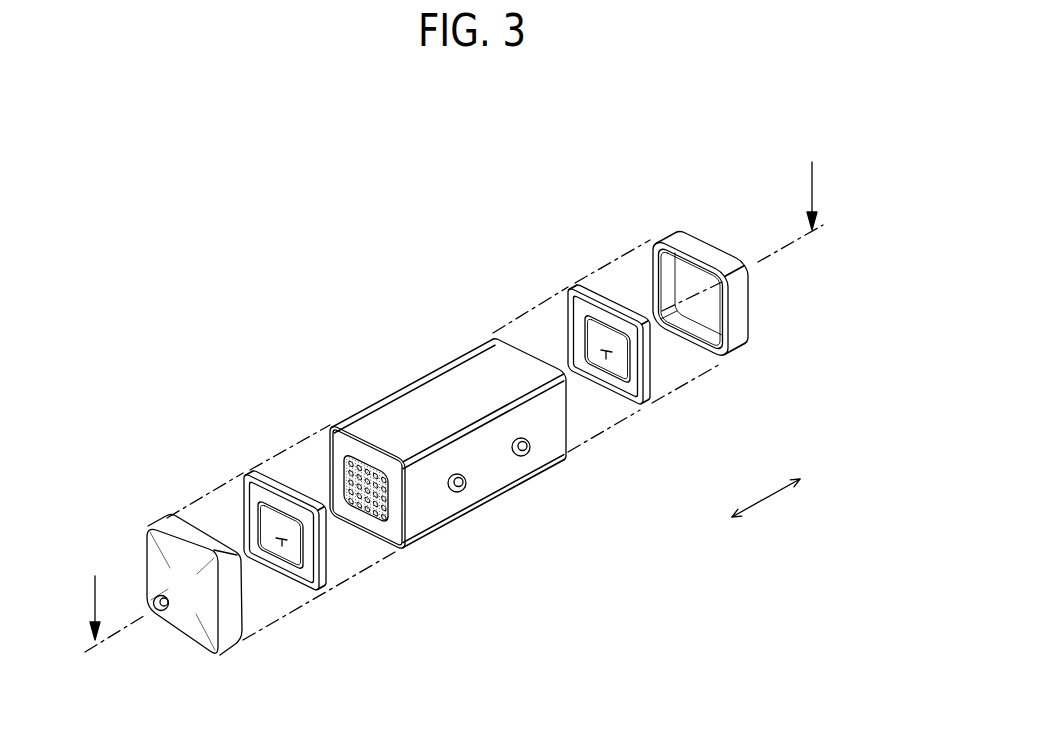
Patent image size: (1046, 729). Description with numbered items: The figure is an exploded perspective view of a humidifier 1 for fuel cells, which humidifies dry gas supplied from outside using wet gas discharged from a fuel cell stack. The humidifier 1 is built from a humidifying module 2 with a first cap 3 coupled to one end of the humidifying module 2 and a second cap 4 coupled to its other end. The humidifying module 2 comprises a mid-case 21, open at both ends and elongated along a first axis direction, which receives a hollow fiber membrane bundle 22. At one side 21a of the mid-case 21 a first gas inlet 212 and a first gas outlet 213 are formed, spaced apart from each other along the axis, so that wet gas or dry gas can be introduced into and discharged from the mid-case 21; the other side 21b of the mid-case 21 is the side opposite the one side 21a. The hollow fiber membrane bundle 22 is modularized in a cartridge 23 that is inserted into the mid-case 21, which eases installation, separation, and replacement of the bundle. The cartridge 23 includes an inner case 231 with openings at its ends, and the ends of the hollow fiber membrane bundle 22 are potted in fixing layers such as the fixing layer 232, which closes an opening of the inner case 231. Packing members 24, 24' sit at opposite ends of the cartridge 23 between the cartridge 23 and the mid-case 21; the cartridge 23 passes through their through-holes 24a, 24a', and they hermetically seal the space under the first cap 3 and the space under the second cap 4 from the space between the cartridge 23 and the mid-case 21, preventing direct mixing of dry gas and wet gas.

The humidifier for fuel cells 1 is at (93, 208).
The humidifying module 2 is at (393, 279).
The first cap 3 is at (160, 523).
The second cap 4 is at (707, 247).
The mid-case 21 is at (432, 357).
The one side of the mid-case 21a is at (490, 470).
The other side of the mid-case 21b is at (477, 342).
The hollow fiber membrane bundle 22 is at (371, 456).
The cartridge 23 is at (481, 630).
The inner case 231 is at (393, 507).
The fixing layer 232 is at (380, 525).
The packing member 24 is at (279, 530).
The packing member 24' is at (591, 351).
The through-hole 24a is at (296, 607).
The through-hole 24a' is at (624, 419).
The first gas inlet 212 is at (458, 493).
The first gas outlet 213 is at (521, 457).